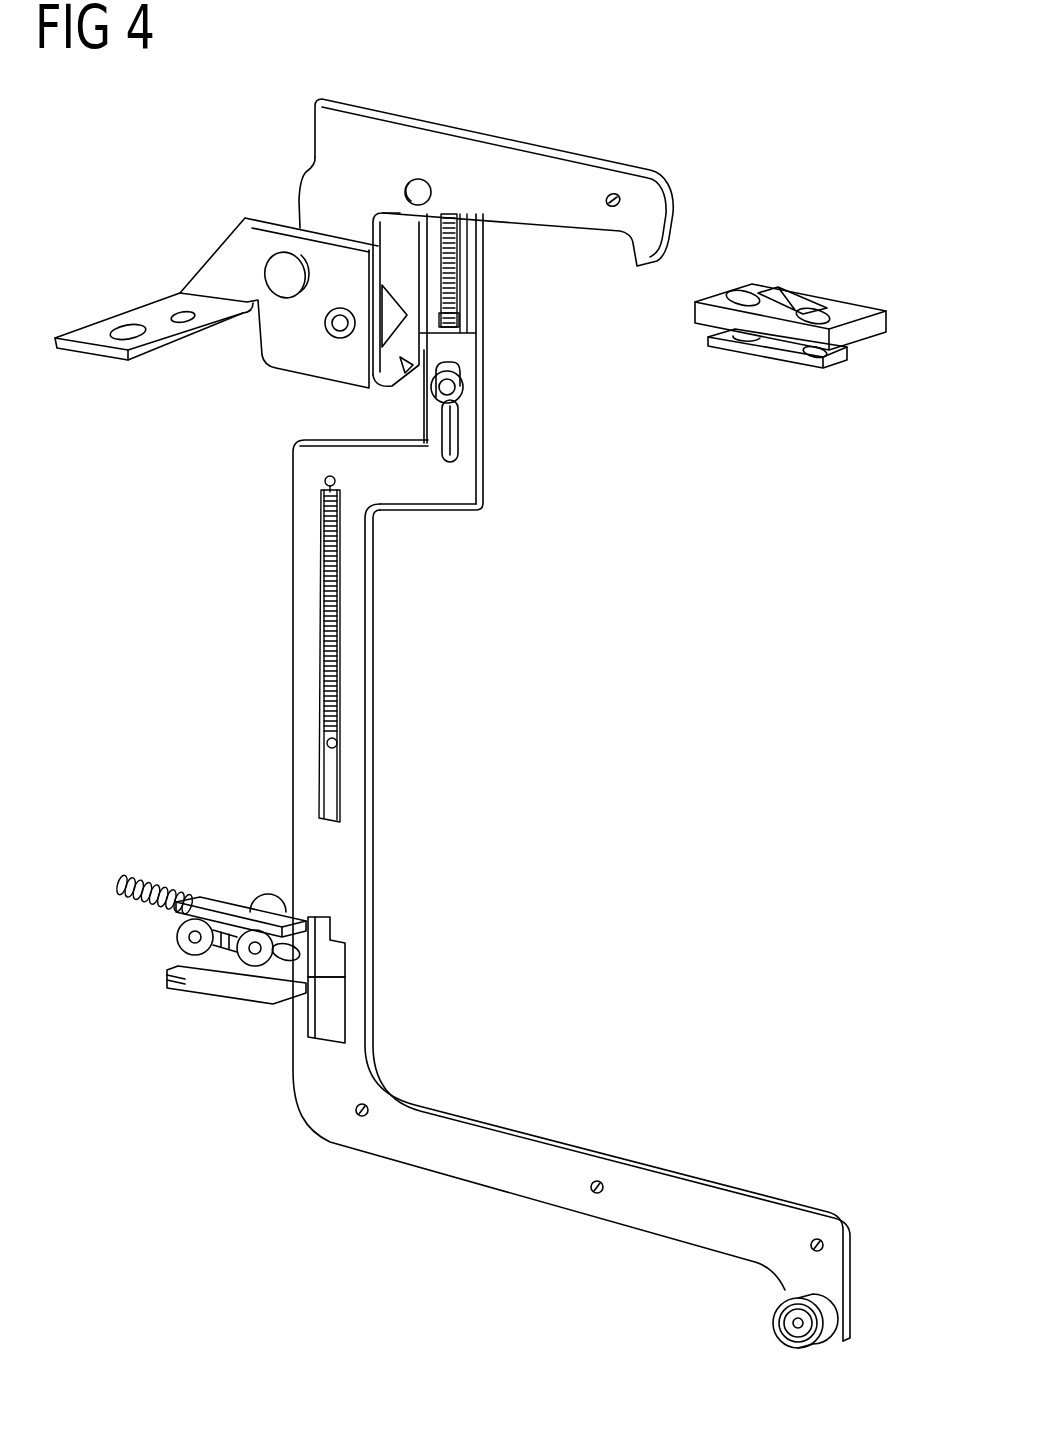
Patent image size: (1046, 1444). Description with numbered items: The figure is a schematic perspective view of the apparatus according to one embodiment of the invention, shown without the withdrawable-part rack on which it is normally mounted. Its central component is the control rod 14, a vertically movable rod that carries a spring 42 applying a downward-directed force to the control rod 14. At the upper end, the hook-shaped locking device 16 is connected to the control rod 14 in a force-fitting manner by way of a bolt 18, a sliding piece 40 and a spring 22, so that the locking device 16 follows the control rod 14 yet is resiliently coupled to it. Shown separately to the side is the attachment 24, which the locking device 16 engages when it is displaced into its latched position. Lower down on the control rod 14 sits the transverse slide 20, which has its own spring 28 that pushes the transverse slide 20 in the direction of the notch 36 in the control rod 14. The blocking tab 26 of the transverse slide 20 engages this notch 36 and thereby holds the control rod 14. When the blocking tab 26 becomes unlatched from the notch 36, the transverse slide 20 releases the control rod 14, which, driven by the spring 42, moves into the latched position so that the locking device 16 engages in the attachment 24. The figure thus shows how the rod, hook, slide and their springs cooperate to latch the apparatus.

The control rod 14 is at (373, 700).
The locking device 16 is at (502, 182).
The bolt 18 is at (412, 180).
The transverse slide 20 is at (228, 975).
The spring 22 is at (458, 308).
The attachment 24 is at (850, 300).
The blocking tab 26 is at (330, 958).
The spring 28 is at (140, 880).
The notch 36 is at (340, 1015).
The sliding piece 40 is at (467, 286).
The spring 42 is at (322, 621).